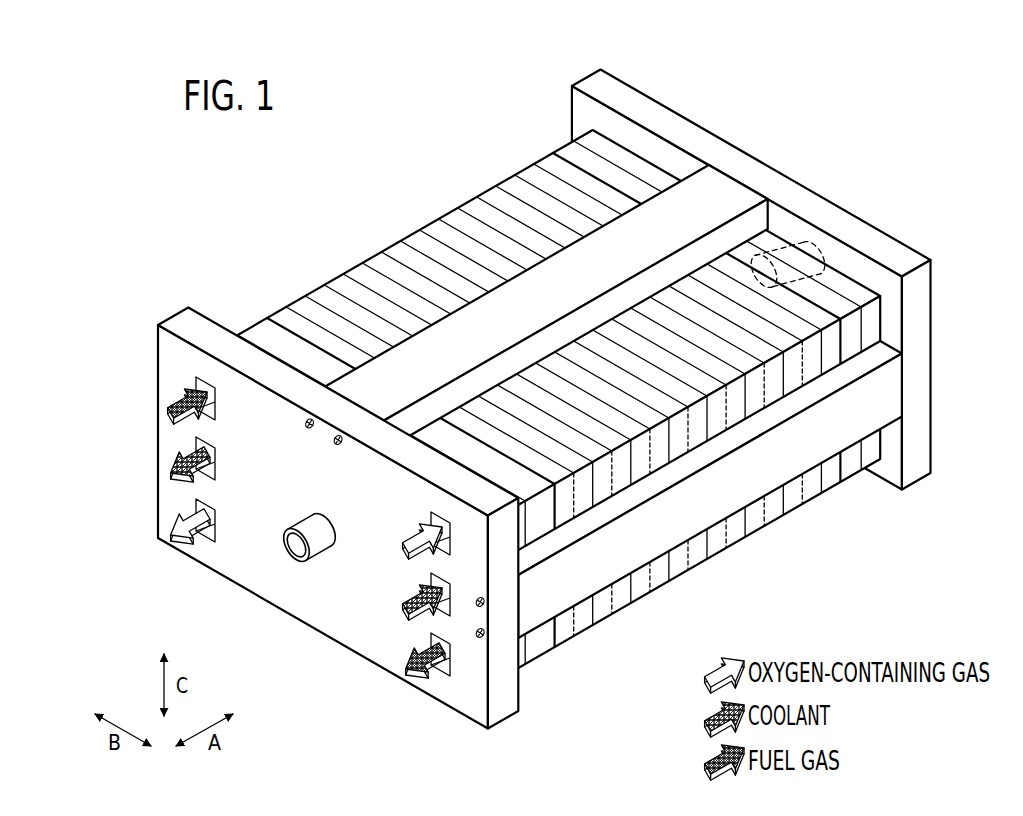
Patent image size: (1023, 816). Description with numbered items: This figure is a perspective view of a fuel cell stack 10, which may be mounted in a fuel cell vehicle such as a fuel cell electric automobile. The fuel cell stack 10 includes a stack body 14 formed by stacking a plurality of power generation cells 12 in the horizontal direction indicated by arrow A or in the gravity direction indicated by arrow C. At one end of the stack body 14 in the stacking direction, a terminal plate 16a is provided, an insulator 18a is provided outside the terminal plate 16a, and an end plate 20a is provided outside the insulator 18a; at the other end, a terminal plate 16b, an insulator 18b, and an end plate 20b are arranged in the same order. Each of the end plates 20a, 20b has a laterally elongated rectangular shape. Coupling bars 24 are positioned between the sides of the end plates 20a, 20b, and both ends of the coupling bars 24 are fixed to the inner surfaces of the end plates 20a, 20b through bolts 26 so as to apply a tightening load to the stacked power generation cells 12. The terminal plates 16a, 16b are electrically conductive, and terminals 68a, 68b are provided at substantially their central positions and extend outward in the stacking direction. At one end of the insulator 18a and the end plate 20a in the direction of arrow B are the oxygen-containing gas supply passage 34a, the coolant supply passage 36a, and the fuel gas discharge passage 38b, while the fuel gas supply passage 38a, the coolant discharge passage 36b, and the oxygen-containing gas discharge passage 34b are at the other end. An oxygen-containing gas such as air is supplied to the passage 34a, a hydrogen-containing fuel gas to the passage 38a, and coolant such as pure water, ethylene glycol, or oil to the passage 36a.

The fuel cell stack 10 is at (261, 176).
The power generation cell 12 is at (449, 207).
The stack body 14 is at (405, 156).
The terminal plate 16a is at (533, 532).
The terminal plate 16b is at (624, 182).
The insulator 18a is at (540, 652).
The insulator 18b is at (610, 150).
The end plate 20a is at (187, 304).
The end plate 20b is at (905, 244).
The coupling bar 24 is at (722, 192).
The bolt 26 is at (316, 421).
The oxygen-containing gas supply passage 34a is at (434, 513).
The oxygen-containing gas discharge passage 34b is at (197, 510).
The coolant supply passage 36a is at (438, 617).
The coolant discharge passage 36b is at (195, 457).
The fuel gas supply passage 38a is at (197, 372).
The fuel gas discharge passage 38b is at (444, 674).
The terminal 68a is at (288, 537).
The terminal 68b is at (832, 262).